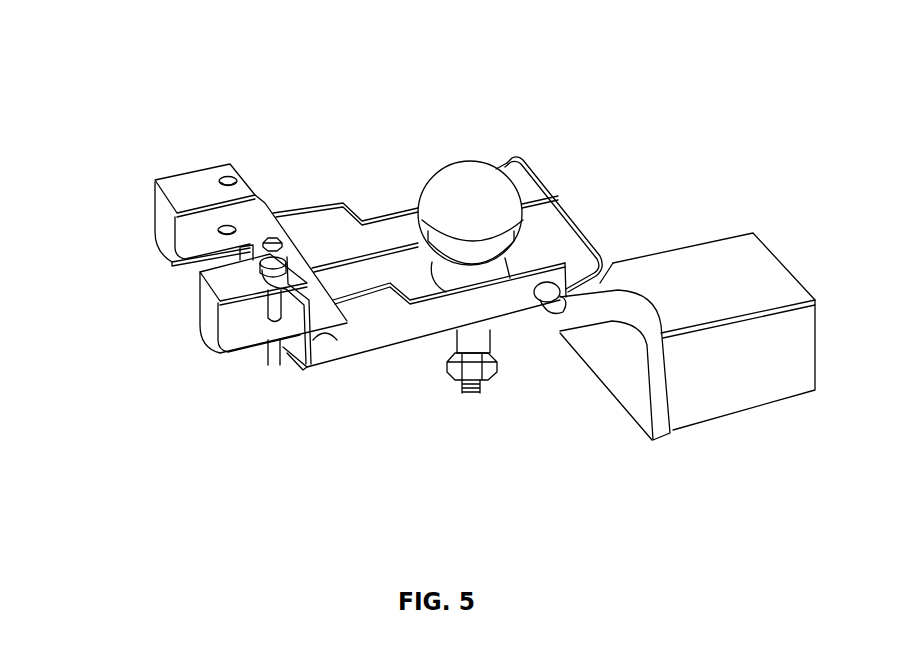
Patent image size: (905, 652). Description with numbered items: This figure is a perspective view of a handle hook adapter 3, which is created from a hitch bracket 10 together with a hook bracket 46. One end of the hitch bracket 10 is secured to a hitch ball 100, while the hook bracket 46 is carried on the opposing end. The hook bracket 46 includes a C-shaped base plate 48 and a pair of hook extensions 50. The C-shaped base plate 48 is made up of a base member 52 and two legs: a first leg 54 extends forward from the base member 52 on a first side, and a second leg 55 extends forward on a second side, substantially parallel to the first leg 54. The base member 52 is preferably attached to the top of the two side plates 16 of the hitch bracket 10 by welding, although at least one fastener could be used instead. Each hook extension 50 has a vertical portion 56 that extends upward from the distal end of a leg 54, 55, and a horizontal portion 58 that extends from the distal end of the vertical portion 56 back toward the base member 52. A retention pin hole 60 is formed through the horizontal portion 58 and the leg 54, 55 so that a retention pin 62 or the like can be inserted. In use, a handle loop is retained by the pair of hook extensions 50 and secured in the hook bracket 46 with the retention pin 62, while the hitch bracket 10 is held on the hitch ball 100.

The handle hook adapter 3 is at (160, 474).
The hitch bracket 10 is at (389, 196).
The side plates 16 is at (410, 328).
The hook bracket 46 is at (215, 374).
The C-shaped base plate 48 is at (260, 227).
The hook extensions 50 is at (150, 245).
The base member 52 is at (278, 224).
The first leg 54 is at (240, 337).
The second leg 55 is at (187, 243).
The vertical portion 56 is at (157, 215).
The horizontal portion 58 is at (193, 172).
The retention pin hole 60 is at (223, 176).
The retention pin 62 is at (303, 368).
The hitch ball 100 is at (477, 172).